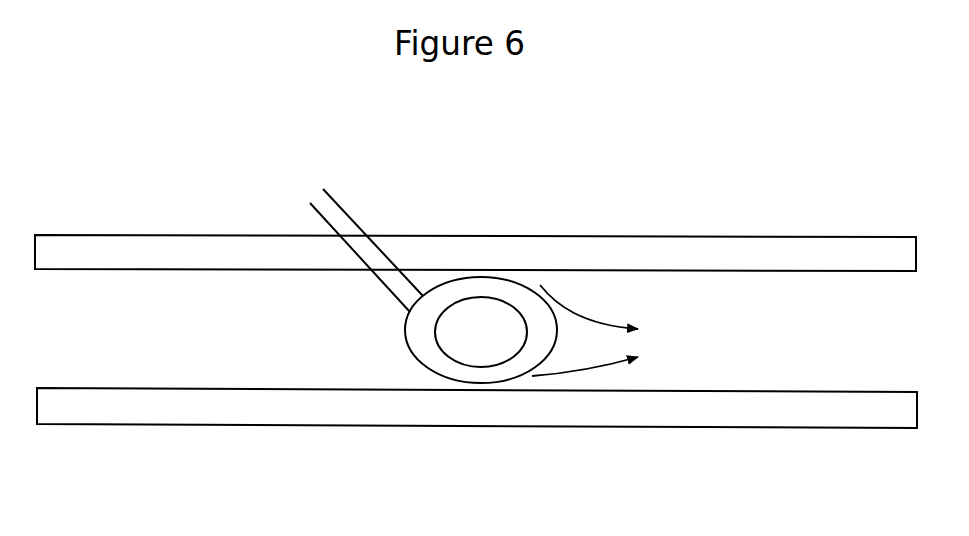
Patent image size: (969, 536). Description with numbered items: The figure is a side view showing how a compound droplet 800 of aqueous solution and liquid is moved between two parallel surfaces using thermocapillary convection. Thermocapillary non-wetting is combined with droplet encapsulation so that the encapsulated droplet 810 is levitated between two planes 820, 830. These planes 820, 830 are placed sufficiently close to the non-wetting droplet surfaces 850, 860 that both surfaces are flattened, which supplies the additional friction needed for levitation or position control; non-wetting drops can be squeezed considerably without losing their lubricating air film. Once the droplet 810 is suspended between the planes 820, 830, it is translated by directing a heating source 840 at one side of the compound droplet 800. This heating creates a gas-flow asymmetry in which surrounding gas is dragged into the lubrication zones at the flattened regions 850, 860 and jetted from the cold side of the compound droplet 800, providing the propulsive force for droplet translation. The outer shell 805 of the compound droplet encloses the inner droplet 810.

The compound droplet 800 is at (453, 342).
The outer shell 805 is at (532, 309).
The encapsulated droplet 810 is at (500, 347).
The plane 820 is at (445, 260).
The plane 830 is at (265, 407).
The heating source 840 is at (350, 230).
The non-wetting droplet surface 850 is at (478, 390).
The non-wetting droplet surface 860 is at (488, 272).